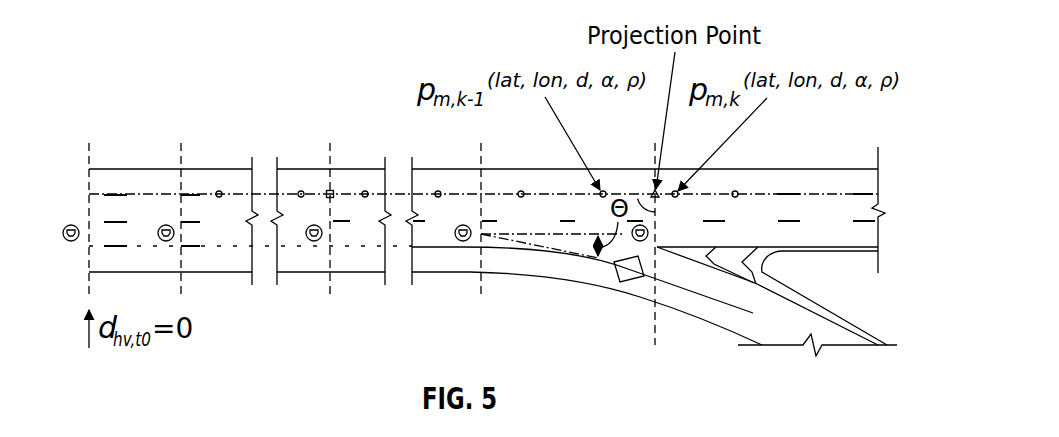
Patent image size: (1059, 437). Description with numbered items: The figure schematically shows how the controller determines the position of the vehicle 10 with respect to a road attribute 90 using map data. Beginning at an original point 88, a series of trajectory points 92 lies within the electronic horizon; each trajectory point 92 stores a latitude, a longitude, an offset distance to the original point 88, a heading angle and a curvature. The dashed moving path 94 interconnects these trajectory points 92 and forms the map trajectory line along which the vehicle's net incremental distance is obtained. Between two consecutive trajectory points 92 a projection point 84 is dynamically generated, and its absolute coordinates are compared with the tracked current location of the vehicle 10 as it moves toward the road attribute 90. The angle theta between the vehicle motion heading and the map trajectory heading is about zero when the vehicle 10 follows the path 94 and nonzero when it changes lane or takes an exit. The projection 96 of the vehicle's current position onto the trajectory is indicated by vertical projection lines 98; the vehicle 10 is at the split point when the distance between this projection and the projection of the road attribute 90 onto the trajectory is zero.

The original point 88 is at (89, 150).
The vehicle 10 is at (69, 242).
The trajectory points 92 is at (217, 191).
The projection of the current position of the vehicle 96 is at (328, 190).
The moving path 94 is at (456, 192).
The projection point 84 is at (647, 195).
The vertical projection lines 98 is at (333, 283).
The road attribute 90 is at (652, 313).